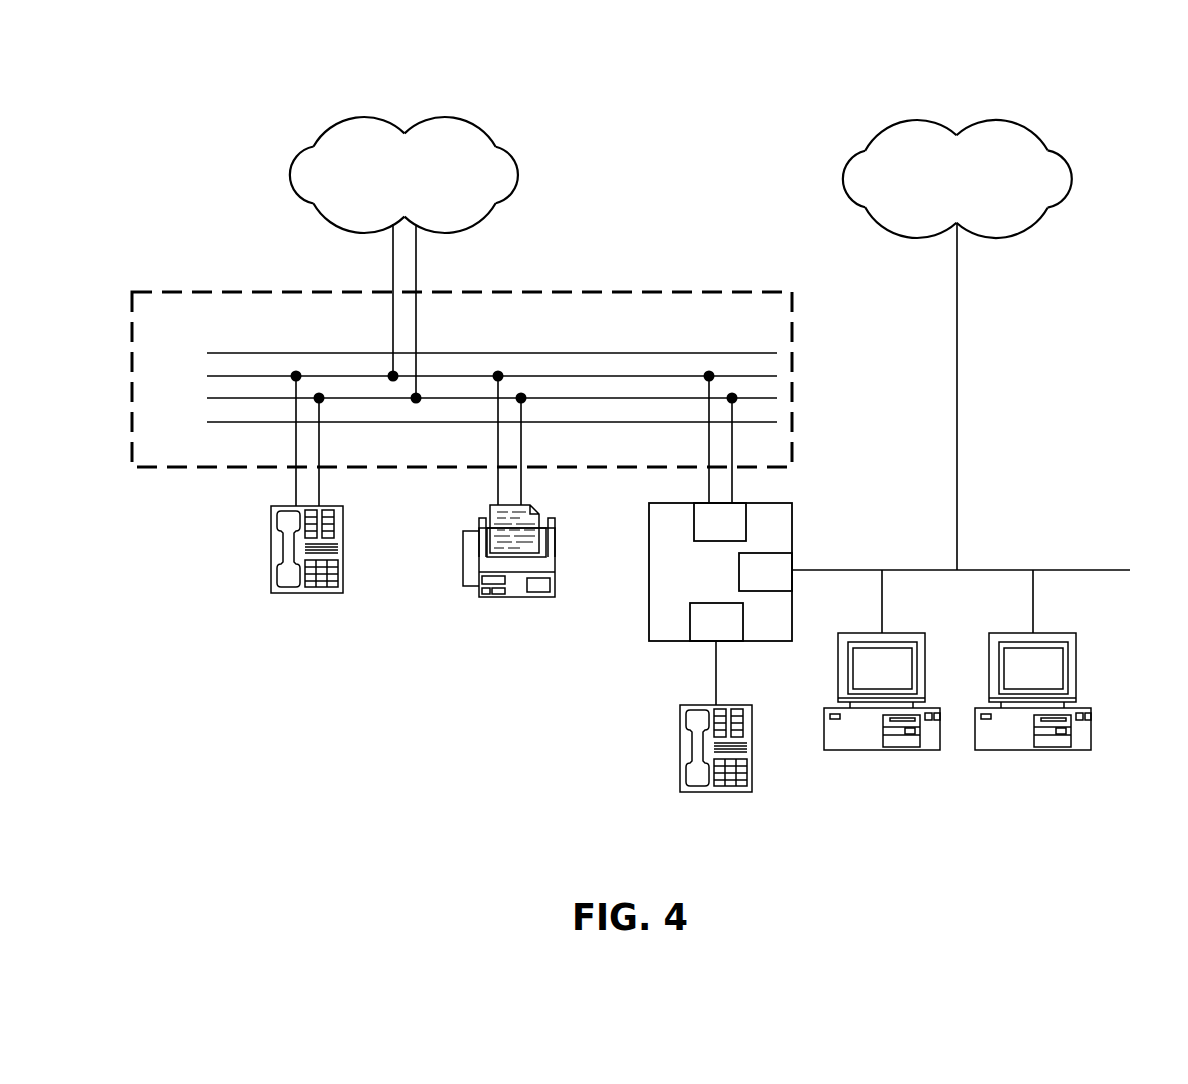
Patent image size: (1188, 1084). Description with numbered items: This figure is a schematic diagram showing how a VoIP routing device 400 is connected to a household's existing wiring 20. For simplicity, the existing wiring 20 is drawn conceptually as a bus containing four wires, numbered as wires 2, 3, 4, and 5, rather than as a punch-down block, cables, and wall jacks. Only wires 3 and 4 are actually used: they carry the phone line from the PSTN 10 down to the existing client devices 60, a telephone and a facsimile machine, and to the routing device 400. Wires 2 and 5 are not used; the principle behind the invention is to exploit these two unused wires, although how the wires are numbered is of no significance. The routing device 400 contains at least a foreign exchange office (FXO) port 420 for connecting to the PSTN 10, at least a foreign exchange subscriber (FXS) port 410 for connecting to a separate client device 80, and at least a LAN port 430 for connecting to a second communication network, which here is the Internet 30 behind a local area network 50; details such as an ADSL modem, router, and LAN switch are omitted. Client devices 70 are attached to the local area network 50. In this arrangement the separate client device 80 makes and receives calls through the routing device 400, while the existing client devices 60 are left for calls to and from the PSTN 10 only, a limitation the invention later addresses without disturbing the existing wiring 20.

The PSTN 10 is at (367, 117).
The Internet 30 is at (912, 122).
The existing wiring 20 is at (205, 292).
The wire 2 is at (470, 353).
The wire 3 is at (470, 376).
The wire 4 is at (470, 398).
The wire 5 is at (470, 422).
The existing client device 60 is at (552, 540).
The VoIP routing device 400 is at (761, 563).
The foreign exchange office (FXO) port 420 is at (720, 522).
The LAN port 430 is at (765, 572).
The foreign exchange subscriber (FXS) port 410 is at (716, 622).
The local area network 50 is at (997, 570).
The client device 70 is at (1078, 708).
The client device 80 is at (680, 748).